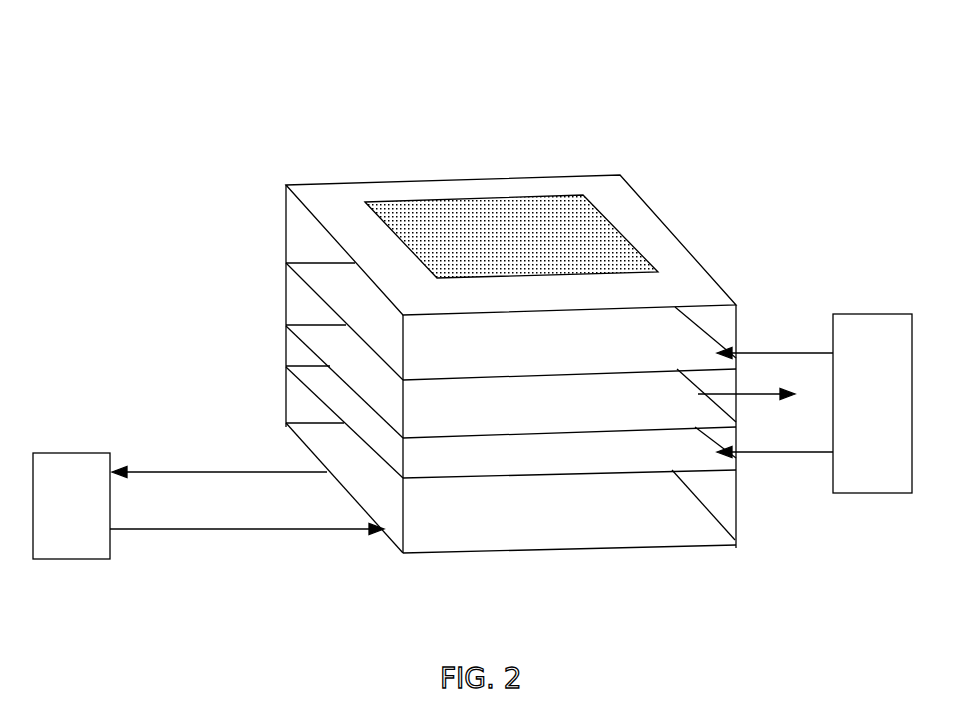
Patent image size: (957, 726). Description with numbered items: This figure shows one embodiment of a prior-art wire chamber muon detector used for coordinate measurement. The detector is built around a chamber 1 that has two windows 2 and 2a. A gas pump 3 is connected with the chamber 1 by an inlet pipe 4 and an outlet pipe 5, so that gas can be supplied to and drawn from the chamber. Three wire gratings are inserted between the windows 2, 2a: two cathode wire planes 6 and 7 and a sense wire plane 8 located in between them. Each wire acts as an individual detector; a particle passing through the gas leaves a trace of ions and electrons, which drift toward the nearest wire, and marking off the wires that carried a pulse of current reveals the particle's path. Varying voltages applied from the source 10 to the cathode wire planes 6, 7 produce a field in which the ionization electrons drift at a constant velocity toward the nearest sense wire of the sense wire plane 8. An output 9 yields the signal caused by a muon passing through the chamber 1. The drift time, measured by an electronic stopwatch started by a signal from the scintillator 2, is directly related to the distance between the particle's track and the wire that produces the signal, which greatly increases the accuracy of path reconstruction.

The chamber 1 is at (651, 113).
The window 2 is at (511, 236).
The window 2a is at (511, 488).
The gas pump 3 is at (71, 506).
The inlet pipe 4 is at (247, 521).
The outlet pipe 5 is at (219, 461).
The cathode wire plane 6 is at (292, 267).
The cathode wire plane 7 is at (329, 412).
The sense wire plane 8 is at (312, 350).
The output 9 is at (756, 406).
The source 10 is at (814, 403).